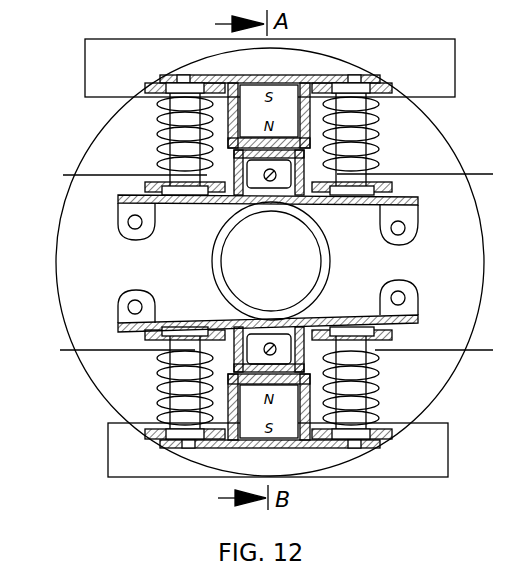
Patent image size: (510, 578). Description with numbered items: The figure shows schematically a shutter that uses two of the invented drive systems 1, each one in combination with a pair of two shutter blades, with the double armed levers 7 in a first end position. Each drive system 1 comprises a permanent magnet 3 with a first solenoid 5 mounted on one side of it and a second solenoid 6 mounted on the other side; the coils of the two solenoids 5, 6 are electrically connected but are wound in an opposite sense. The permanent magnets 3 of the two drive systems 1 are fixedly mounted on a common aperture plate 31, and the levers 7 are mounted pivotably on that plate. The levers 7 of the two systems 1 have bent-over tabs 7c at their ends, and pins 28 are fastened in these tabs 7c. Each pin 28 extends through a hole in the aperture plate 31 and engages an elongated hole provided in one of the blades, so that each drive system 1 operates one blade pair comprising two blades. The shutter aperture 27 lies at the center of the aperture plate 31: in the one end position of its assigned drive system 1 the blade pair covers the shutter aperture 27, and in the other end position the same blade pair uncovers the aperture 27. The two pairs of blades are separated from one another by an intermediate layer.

The drive system 1 is at (60, 88).
The permanent magnet 3 is at (183, 110).
The first solenoid 5 is at (185, 137).
The second solenoid 6 is at (355, 143).
The lever 7 is at (184, 204).
The bent-over tab 7c is at (137, 233).
The shutter aperture 27 is at (222, 268).
The pin 28 is at (130, 221).
The aperture plate 31 is at (125, 402).